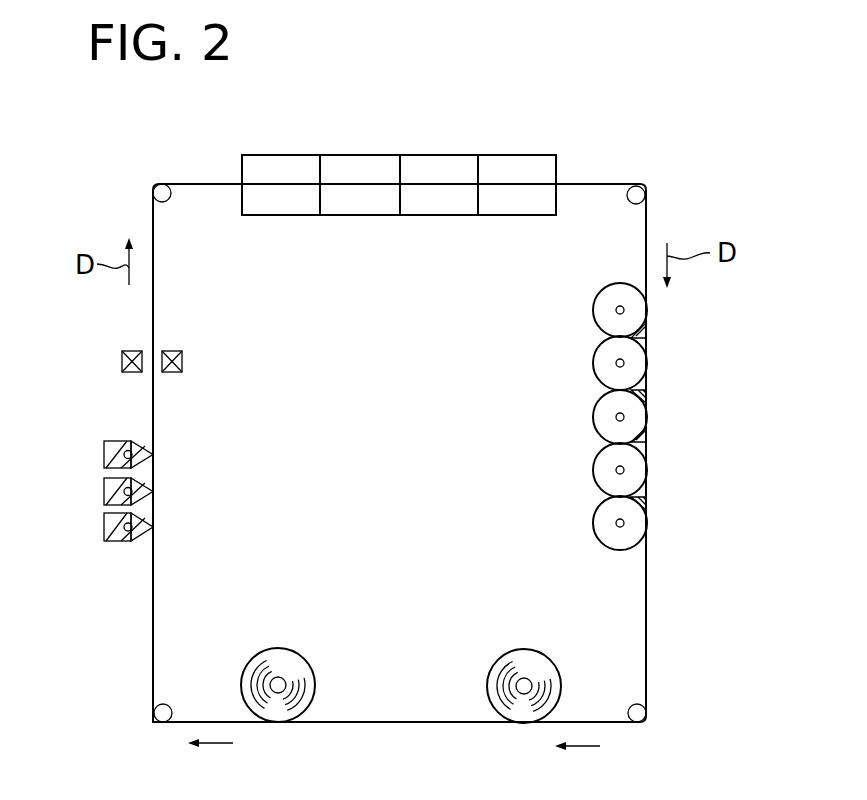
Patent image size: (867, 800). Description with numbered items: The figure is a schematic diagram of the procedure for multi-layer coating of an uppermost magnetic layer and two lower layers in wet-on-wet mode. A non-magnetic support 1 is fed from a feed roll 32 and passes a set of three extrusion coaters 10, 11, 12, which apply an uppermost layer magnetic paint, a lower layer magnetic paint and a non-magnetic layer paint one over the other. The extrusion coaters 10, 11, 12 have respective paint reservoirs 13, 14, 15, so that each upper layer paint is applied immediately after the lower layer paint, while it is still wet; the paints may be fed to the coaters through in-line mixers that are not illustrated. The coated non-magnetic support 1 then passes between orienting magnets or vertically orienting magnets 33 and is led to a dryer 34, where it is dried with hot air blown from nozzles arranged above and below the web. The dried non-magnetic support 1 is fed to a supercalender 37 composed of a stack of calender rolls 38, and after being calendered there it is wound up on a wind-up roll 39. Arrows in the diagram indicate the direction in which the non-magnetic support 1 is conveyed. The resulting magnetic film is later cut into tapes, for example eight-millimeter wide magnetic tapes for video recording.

The non-magnetic support 1 is at (156, 583).
The extrusion coater 10 is at (89, 566).
The extrusion coater 11 is at (139, 488).
The extrusion coater 12 is at (127, 442).
The paint reservoir 13 is at (128, 540).
The paint reservoir 14 is at (135, 485).
The third head roller 15 is at (132, 450).
The feed roll 32 is at (278, 677).
The orienting magnets 33 is at (183, 361).
The dryer 34 is at (385, 220).
The supercalender 37 is at (564, 416).
The calender rolls 38 is at (598, 309).
The wind-up roll 39 is at (524, 678).